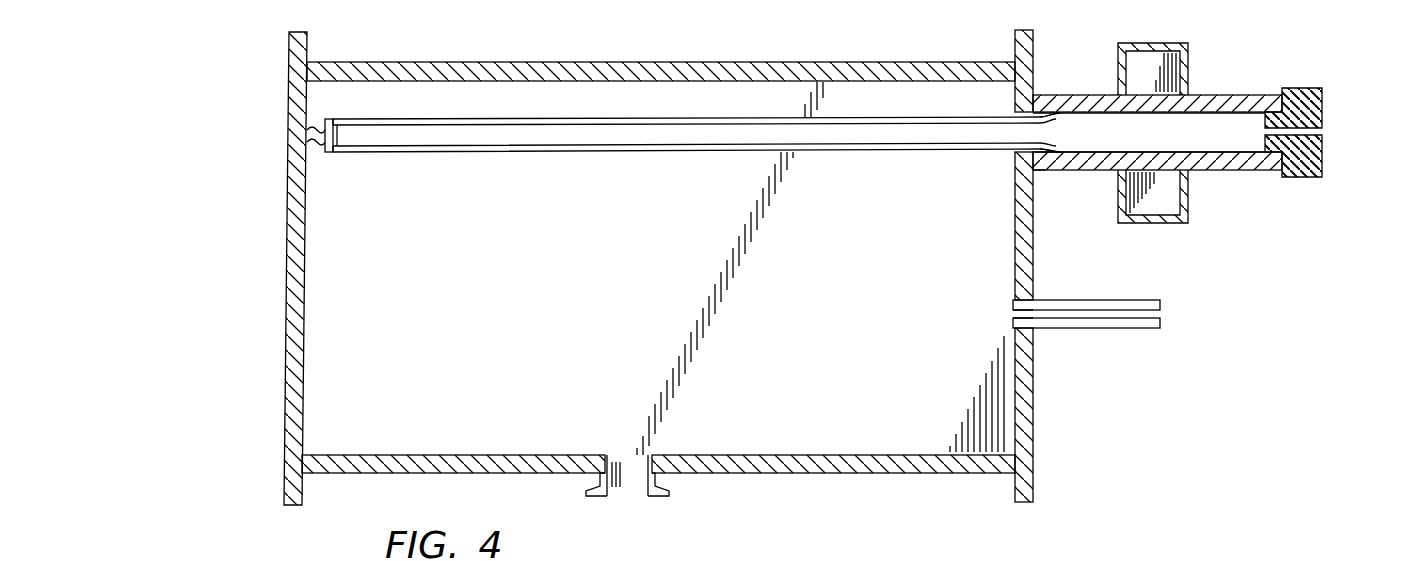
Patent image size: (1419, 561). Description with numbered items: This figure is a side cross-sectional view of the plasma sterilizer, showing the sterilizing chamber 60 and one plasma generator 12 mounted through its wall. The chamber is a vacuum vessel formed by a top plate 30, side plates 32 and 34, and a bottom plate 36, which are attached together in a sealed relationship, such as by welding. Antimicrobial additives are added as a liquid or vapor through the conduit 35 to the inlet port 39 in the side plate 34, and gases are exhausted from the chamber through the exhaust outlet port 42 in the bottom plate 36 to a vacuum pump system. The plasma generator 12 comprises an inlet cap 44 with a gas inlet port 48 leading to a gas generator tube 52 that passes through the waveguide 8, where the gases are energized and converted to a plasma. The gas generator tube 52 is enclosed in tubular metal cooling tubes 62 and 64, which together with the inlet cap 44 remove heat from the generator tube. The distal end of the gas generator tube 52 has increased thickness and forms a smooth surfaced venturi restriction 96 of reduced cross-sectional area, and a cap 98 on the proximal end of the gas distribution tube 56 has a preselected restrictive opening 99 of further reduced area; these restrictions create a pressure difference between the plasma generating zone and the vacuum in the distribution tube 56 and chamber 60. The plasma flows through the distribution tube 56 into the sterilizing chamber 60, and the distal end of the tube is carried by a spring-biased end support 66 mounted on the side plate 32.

The waveguide 8 is at (1168, 43).
The plasma generator 12 is at (1212, 65).
The top plate 30 is at (578, 63).
The side plate 32 is at (288, 172).
The side plate 34 is at (1032, 372).
The conduit 35 is at (1127, 300).
The bottom plate 36 is at (510, 455).
The inlet port 39 is at (1012, 317).
The exhaust outlet port 42 is at (653, 492).
The inlet cap 44 is at (1287, 175).
The gas inlet port 48 is at (1323, 130).
The gas generator tube 52 is at (1098, 120).
The gas distribution tube 56 is at (670, 152).
The sterilizing chamber 60 is at (987, 275).
The cooling tube 62 is at (1247, 95).
The cooling tube 64 is at (1097, 172).
The spring-biased end support 66 is at (310, 133).
The venturi restriction 96 is at (1042, 177).
The cap 98 is at (1042, 123).
The restrictive opening 99 is at (1040, 133).